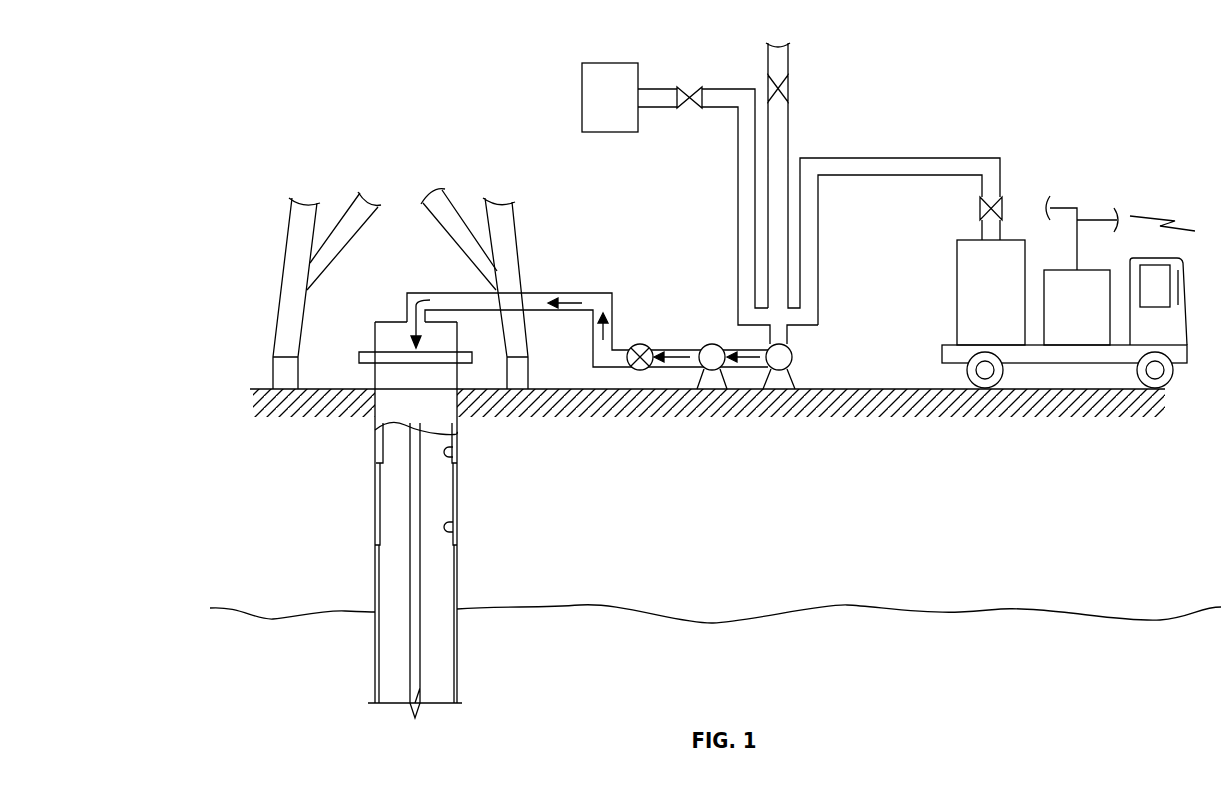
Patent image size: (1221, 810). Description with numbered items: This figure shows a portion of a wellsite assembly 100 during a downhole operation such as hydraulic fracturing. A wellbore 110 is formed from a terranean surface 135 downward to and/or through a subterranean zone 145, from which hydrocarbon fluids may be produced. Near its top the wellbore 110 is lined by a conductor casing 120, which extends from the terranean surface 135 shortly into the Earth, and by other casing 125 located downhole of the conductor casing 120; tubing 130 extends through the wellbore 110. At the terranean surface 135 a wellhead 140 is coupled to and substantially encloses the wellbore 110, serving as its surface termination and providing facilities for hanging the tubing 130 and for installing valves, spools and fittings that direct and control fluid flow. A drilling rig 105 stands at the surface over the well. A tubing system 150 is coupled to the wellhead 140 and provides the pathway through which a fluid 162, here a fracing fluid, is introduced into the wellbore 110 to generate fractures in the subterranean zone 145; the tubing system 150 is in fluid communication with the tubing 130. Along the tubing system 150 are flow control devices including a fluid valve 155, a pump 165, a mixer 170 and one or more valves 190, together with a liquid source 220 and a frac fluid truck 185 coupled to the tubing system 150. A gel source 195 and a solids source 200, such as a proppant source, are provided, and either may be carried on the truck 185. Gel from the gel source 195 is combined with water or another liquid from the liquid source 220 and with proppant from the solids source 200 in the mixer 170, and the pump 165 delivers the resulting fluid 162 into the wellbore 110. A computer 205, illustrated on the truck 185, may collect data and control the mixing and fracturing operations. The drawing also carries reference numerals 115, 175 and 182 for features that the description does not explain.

The wellsite assembly 100 is at (301, 91).
The drilling rig 105 is at (290, 278).
The wellbore 110 is at (375, 565).
The annulus 115 is at (448, 660).
The conductor casing 120 is at (455, 452).
The other casing 125 is at (455, 527).
The tubing 130 is at (421, 607).
The terranean surface 135 is at (326, 382).
The wellhead 140 is at (390, 322).
The subterranean zone 145 is at (571, 620).
The tubing system 150 is at (600, 293).
The fluid valve 155 is at (641, 370).
The fluid 162 is at (418, 323).
The pump 165 is at (712, 370).
The mixer 170 is at (792, 352).
The controller 175 is at (1063, 200).
The wireless communication link 182 is at (1113, 215).
The frac fluid truck 185 is at (1057, 363).
The valves 190 is at (694, 88).
The gel source 195 is at (991, 292).
The solids source 200 is at (610, 97).
The computer 205 is at (1077, 307).
The liquid source 220 is at (790, 62).